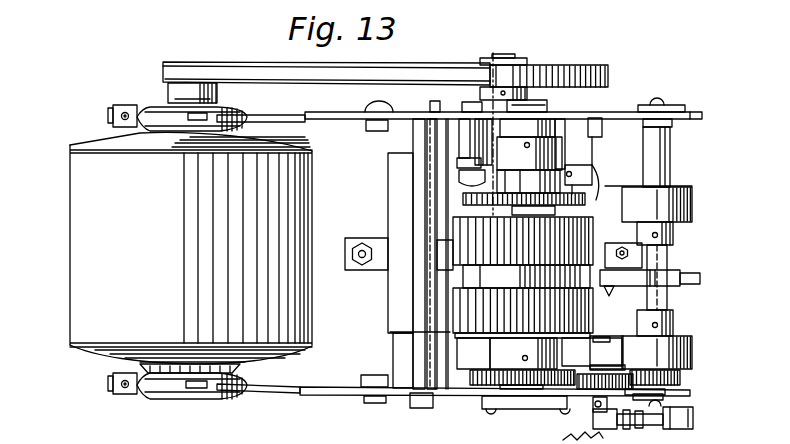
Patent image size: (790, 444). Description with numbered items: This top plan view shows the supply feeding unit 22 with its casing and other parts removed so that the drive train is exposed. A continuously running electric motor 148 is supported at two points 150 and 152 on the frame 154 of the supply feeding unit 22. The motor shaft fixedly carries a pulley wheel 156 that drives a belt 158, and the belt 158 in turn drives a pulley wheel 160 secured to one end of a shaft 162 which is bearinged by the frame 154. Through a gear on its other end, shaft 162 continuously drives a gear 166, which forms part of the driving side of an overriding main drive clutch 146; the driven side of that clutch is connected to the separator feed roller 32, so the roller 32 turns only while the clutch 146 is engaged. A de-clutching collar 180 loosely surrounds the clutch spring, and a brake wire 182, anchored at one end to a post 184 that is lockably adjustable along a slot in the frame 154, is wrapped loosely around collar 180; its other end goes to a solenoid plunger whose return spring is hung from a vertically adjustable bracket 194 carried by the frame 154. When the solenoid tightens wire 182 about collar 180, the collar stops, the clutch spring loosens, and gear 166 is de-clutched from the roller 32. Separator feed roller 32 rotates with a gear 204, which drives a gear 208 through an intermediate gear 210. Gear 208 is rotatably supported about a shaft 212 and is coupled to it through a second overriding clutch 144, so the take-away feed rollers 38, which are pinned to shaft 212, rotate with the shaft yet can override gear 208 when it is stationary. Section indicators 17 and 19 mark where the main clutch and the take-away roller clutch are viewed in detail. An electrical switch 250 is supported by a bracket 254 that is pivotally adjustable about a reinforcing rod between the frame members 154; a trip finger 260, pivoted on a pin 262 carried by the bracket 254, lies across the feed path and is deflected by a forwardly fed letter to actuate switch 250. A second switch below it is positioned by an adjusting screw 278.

The continuously running electric motor 148 is at (70, 305).
The motor support 152 is at (146, 104).
The motor support 150 is at (166, 388).
The pulley wheel 156 is at (208, 63).
The belt 158 is at (256, 70).
The frame 154 is at (296, 122).
The pulley wheel 160 is at (596, 66).
The shaft 162 is at (505, 59).
The section line 17 is at (531, 102).
The post 184 is at (463, 127).
The de-clutching collar 180 is at (498, 185).
The wire 182 is at (562, 160).
The main drive clutch 146 is at (611, 158).
The vertically adjustable bracket 194 is at (585, 169).
The gear 166 is at (592, 206).
The separator feed roller 32 is at (590, 248).
The gear 204 is at (479, 372).
The intermediate gear 210 is at (585, 374).
The gear 208 is at (680, 383).
The overriding clutch 144 is at (687, 383).
The adjusting screw 278 is at (650, 422).
The shaft 212 is at (669, 166).
The take-away feed rollers 38 is at (692, 201).
The bracket 254 is at (635, 267).
The shaft section 19 is at (661, 303).
The electrical switch 250 is at (680, 272).
The trip finger 260 is at (700, 278).
The pin 262 is at (608, 288).
The supply feeding unit 22 is at (39, 439).